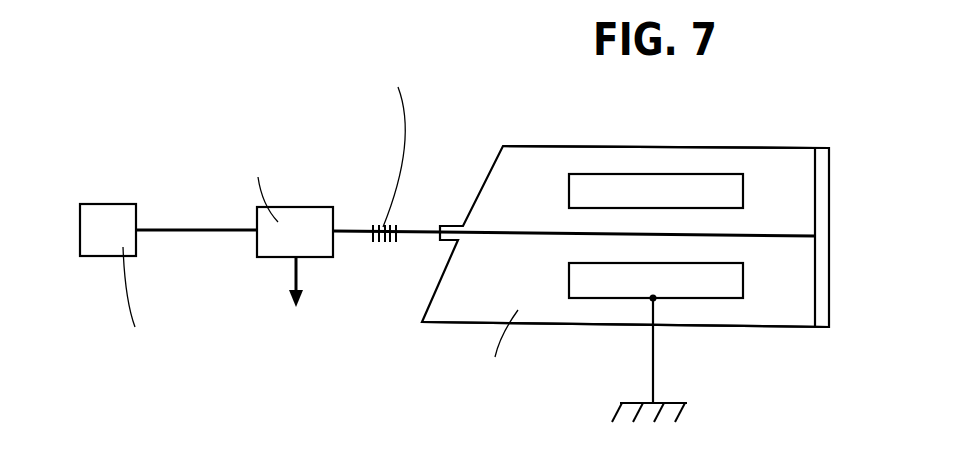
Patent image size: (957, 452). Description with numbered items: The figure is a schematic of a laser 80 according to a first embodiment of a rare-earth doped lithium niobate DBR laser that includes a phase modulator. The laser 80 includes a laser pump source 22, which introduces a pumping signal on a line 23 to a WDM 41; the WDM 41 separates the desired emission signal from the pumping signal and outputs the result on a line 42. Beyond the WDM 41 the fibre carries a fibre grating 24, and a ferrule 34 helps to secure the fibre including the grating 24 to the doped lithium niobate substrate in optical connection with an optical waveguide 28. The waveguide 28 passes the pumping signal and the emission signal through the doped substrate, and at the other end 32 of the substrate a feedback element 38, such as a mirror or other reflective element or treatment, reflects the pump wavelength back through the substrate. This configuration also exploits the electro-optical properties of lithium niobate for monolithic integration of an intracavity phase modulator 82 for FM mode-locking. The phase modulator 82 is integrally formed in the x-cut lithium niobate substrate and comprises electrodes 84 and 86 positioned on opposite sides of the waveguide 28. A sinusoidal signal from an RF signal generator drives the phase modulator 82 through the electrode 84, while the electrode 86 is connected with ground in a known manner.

The laser 80 is at (194, 144).
The laser pump source 22 is at (93, 250).
The line 23 is at (190, 227).
The WDM 41 is at (307, 207).
The line 42 is at (290, 273).
The fibre grating 24 is at (392, 240).
The ferrule 34 is at (530, 162).
The optical waveguide 28 is at (497, 237).
The electrode 84 is at (658, 173).
The phase modulator 82 is at (782, 171).
The other end 32 is at (832, 212).
The electrode 86 is at (743, 290).
The feedback element 38 is at (822, 328).